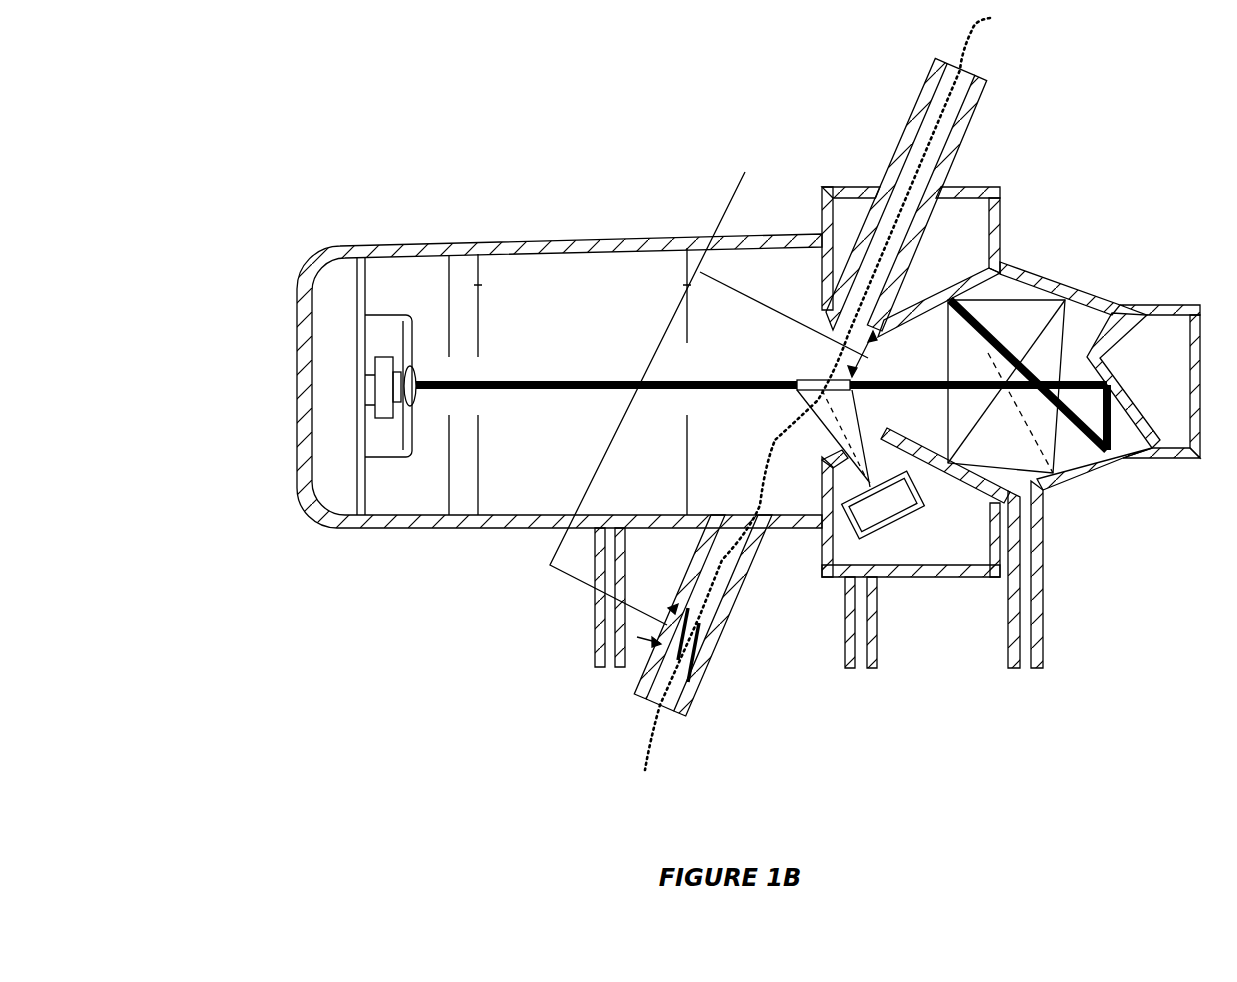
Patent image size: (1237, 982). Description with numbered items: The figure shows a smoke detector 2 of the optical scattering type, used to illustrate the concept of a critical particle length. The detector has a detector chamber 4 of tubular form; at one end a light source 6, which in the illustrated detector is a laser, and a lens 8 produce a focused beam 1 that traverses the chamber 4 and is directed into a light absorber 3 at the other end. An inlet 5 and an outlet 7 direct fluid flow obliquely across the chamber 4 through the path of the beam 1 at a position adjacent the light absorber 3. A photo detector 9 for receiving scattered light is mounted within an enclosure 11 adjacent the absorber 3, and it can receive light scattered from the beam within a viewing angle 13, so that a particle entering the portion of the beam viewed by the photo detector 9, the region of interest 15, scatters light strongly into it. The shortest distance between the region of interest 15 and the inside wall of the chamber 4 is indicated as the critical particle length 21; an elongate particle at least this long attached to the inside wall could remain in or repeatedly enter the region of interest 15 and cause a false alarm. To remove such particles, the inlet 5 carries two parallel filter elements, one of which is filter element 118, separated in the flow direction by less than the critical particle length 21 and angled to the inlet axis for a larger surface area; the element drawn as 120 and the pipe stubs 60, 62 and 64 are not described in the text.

The focused beam 1 is at (563, 381).
The smoke detector 2 is at (345, 628).
The light absorber 3 is at (1090, 318).
The detector chamber 4 is at (740, 236).
The inlet 5 is at (680, 600).
The light source 6 is at (400, 335).
The outlet 7 is at (957, 148).
The lens 8 is at (418, 364).
The photo detector 9 is at (897, 523).
The enclosure 11 is at (821, 562).
The viewing angle 13 is at (869, 370).
The region of interest 15 is at (811, 379).
The critical particle length 21 is at (695, 370).
The pipe 60 is at (595, 643).
The pipe 62 is at (845, 643).
The pipe 64 is at (1008, 641).
The filter element 118 is at (697, 643).
The flow cell wall 120 is at (687, 662).